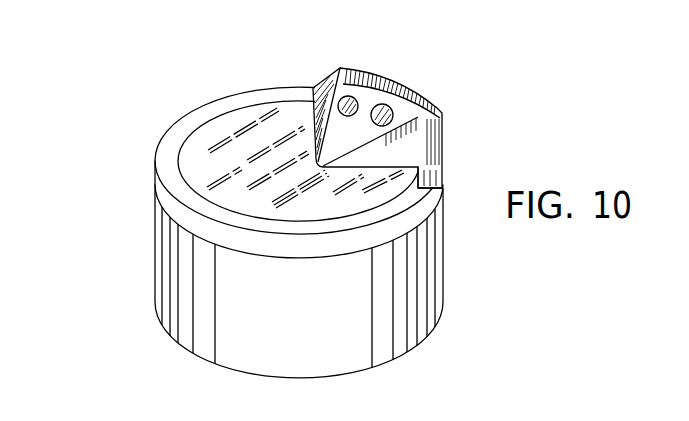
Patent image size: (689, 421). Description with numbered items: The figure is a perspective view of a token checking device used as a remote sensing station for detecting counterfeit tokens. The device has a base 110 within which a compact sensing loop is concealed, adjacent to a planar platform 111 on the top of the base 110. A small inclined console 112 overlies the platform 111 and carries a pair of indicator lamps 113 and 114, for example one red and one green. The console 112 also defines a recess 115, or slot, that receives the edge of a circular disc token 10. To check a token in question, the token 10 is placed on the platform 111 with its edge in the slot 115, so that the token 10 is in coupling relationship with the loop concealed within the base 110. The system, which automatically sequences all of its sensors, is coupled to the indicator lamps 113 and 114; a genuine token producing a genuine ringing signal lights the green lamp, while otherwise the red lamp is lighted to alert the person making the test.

The token 10 is at (170, 153).
The base 110 is at (173, 258).
The planar platform 111 is at (226, 128).
The inclined console 112 is at (420, 96).
The indicator lamp 113 is at (338, 104).
The indicator lamp 114 is at (385, 108).
The recess 115 is at (443, 186).